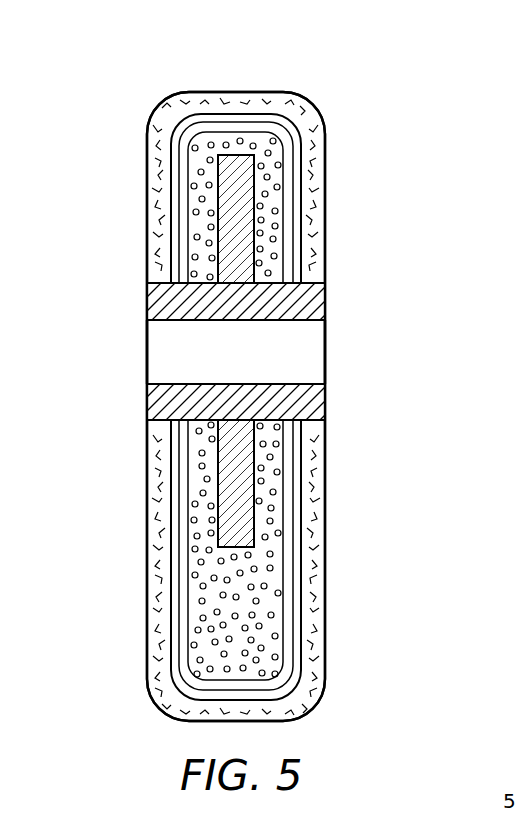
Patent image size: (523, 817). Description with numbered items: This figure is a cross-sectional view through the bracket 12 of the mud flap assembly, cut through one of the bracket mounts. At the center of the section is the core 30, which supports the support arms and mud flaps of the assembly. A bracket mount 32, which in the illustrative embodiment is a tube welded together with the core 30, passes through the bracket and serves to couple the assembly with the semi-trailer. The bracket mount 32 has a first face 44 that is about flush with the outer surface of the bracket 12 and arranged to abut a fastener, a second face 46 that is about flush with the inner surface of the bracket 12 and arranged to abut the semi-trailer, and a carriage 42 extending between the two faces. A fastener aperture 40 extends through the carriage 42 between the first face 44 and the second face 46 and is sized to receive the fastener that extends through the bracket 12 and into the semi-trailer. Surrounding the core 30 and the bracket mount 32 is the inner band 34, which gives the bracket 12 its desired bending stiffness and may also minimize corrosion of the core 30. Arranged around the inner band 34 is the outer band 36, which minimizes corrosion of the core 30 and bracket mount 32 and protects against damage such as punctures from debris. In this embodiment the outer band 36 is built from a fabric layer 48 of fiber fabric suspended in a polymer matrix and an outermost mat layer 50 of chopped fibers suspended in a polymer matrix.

The bracket 12 is at (363, 85).
The core 30 is at (238, 223).
The bracket mount 32 is at (313, 287).
The inner band 34 is at (202, 642).
The outer band 36 is at (333, 663).
The fastener aperture 40 is at (108, 352).
The carriage 42 is at (178, 282).
The first face 44 is at (328, 402).
The second face 46 is at (148, 408).
The fabric layer 48 is at (297, 228).
The mat layer 50 is at (157, 163).